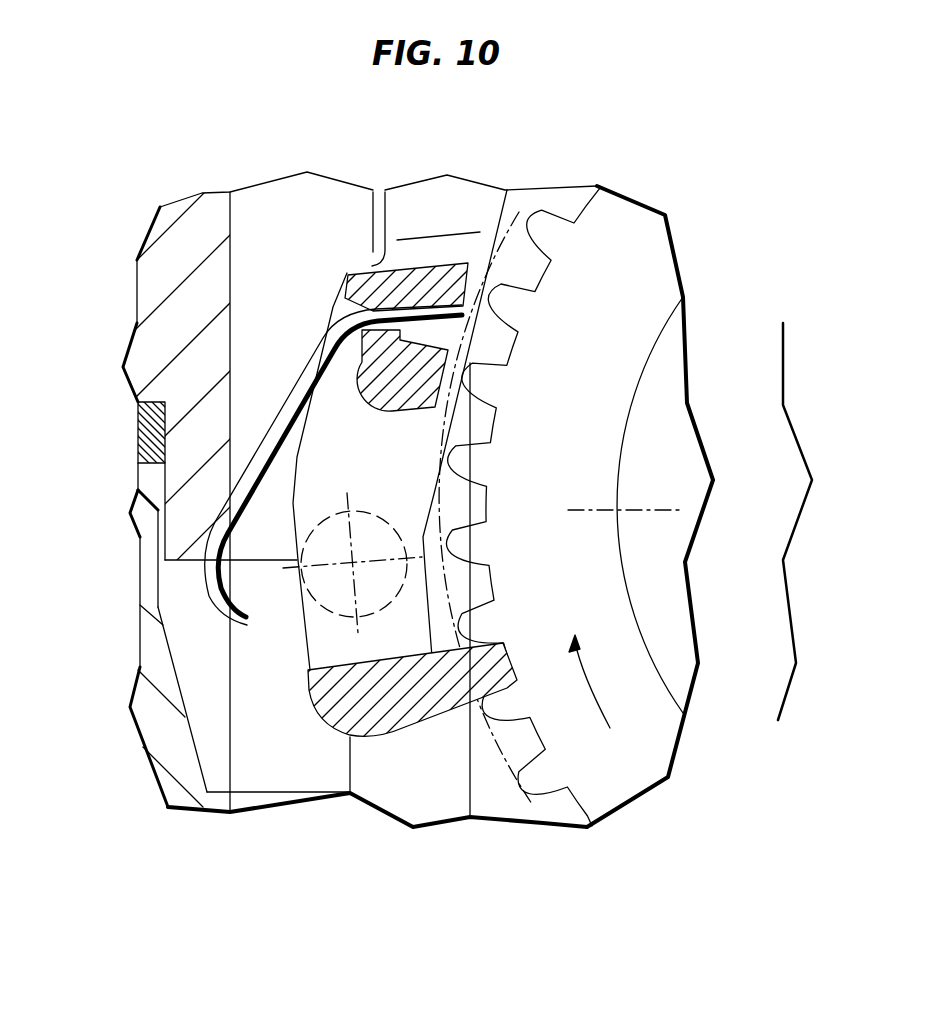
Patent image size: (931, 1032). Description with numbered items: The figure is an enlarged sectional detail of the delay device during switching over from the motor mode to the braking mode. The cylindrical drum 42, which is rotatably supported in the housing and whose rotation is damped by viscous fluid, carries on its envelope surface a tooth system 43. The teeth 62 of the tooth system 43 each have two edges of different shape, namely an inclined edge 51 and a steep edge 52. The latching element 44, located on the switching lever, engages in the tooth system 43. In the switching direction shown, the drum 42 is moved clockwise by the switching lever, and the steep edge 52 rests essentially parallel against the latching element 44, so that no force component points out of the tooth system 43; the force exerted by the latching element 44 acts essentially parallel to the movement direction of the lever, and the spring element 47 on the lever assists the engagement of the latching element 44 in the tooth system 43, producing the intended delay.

The drum 42 is at (618, 250).
The tooth system 43 is at (523, 248).
The latching element 44 is at (397, 722).
The spring element 47 is at (273, 428).
The inclined edge 51 is at (503, 752).
The steep edge 52 is at (447, 722).
The teeth 62 is at (547, 790).